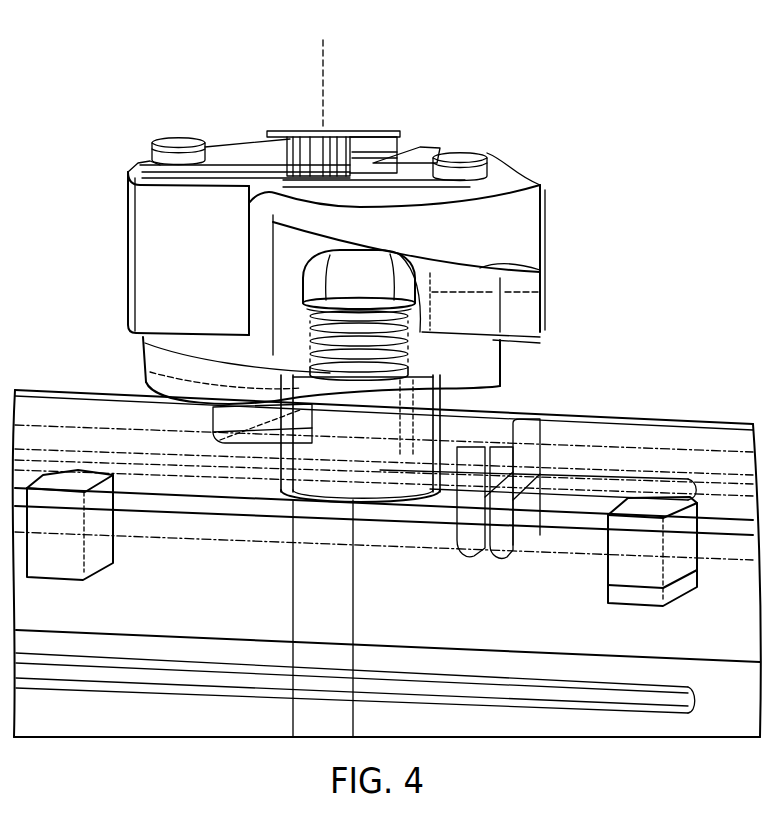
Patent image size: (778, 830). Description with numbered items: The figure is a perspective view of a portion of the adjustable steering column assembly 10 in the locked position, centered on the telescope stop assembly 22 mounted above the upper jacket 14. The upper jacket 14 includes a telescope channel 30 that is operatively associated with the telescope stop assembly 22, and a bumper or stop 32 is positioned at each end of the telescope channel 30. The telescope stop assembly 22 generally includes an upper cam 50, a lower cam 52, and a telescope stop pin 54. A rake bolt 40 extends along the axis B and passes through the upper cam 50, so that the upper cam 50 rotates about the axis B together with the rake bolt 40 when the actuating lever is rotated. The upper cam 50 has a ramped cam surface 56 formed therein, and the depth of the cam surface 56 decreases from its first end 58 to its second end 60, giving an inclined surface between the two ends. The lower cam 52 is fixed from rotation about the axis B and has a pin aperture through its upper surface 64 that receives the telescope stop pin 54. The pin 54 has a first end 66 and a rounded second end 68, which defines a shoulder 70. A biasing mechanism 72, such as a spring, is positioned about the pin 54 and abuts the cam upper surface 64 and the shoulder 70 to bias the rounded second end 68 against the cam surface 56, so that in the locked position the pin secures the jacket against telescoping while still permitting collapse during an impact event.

The adjustable steering column assembly 10 is at (624, 74).
The upper jacket 14 is at (700, 433).
The telescope stop assembly 22 is at (82, 250).
The telescope channel 30 is at (562, 518).
The bumper or stop 32 is at (80, 477).
The rake bolt 40 is at (349, 143).
The upper cam 50 is at (130, 162).
The lower cam 52 is at (509, 386).
The telescope stop pin 54 is at (394, 309).
The ramped cam surface 56 is at (463, 270).
The first end 58 is at (350, 238).
The second end 60 is at (531, 268).
The upper surface 64 is at (303, 373).
The first end 66 is at (340, 483).
The rounded second end 68 is at (305, 276).
The shoulder 70 is at (416, 306).
The biasing mechanism 72 is at (412, 348).
The axis B is at (318, 108).